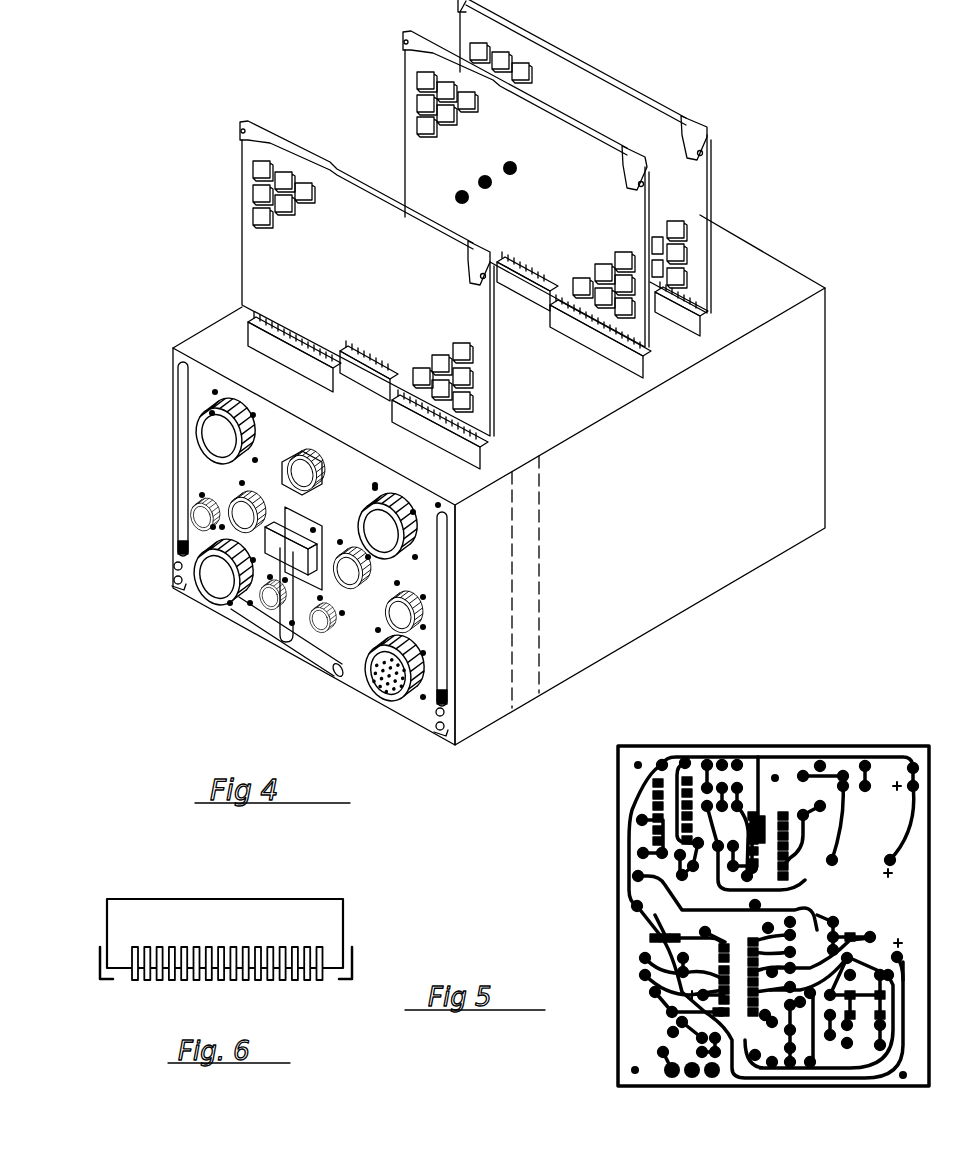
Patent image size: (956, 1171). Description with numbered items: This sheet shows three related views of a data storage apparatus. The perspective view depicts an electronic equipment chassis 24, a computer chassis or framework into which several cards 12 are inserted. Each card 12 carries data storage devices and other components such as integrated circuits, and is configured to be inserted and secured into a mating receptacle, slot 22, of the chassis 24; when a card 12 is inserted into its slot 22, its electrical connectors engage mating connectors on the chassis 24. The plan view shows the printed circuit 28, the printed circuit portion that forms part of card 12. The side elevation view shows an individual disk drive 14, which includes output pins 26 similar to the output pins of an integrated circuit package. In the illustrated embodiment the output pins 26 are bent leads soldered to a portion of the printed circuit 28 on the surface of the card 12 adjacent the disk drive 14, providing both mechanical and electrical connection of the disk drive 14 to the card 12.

In FIG. 4, the card 12 is at (360, 178).
In FIG. 5, the card 12 is at (650, 1078).
In FIG. 6, the disk drive 14 is at (293, 917).
In FIG. 4, the slot 22 is at (242, 302).
In FIG. 4, the electronic equipment chassis 24 is at (775, 535).
In FIG. 6, the output pins 26 is at (97, 963).
In FIG. 5, the printed circuit 28 is at (567, 921).